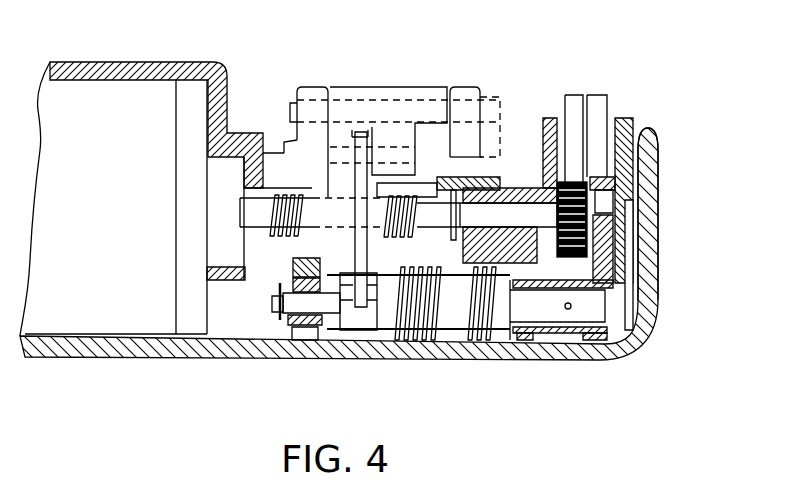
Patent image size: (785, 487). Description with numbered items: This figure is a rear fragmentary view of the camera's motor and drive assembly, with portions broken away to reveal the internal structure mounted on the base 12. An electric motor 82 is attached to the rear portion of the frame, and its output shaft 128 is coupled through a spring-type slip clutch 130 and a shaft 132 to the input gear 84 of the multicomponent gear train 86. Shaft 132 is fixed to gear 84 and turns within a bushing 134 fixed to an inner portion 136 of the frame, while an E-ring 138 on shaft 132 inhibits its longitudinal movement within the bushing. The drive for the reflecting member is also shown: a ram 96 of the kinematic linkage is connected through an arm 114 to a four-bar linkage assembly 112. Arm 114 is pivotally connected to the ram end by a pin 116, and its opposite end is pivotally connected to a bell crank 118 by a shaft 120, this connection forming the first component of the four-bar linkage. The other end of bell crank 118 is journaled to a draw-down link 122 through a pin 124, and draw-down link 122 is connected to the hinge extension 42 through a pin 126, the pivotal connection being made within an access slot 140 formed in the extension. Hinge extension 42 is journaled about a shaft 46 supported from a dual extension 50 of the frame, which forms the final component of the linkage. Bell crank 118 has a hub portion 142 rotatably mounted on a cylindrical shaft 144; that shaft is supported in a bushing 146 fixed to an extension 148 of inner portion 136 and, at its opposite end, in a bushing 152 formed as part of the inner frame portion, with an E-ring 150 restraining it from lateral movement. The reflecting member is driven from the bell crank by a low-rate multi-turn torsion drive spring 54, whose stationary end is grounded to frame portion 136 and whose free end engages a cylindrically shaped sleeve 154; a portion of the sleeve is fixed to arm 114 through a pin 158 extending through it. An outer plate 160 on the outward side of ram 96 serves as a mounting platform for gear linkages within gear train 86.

The base 12 is at (658, 212).
The hinge extension 42 is at (385, 97).
The shaft 46 is at (482, 110).
The dual extension 50 is at (463, 93).
The drive spring 54 is at (425, 342).
The electric motor 82 is at (133, 89).
The input gear 84 is at (578, 183).
The gear train 86 is at (620, 91).
The ram 96 is at (645, 147).
The four-bar linkage assembly 112 is at (374, 82).
The arm 114 is at (610, 284).
The pin 116 is at (603, 203).
The bell crank 118 is at (373, 321).
The shaft 120 is at (570, 309).
The draw-down link 122 is at (360, 262).
The pin 124 is at (333, 318).
The pin 126 is at (405, 158).
The output shaft 128 is at (262, 212).
The spring-type slip clutch 130 is at (300, 199).
The shaft 132 is at (495, 213).
The bushing 134 is at (527, 210).
The inner portion of frame 136 is at (463, 150).
The E-ring 138 is at (455, 240).
The access slot 140 is at (360, 137).
The hub portion 142 is at (338, 302).
The cylindrical shaft 144 is at (312, 309).
The bushing 146 is at (290, 280).
The extension 148 is at (318, 270).
The E-ring 150 is at (279, 323).
The bushing 152 is at (530, 387).
The sleeve 154 is at (447, 318).
The pin 158 is at (602, 347).
The outer plate 160 is at (628, 255).